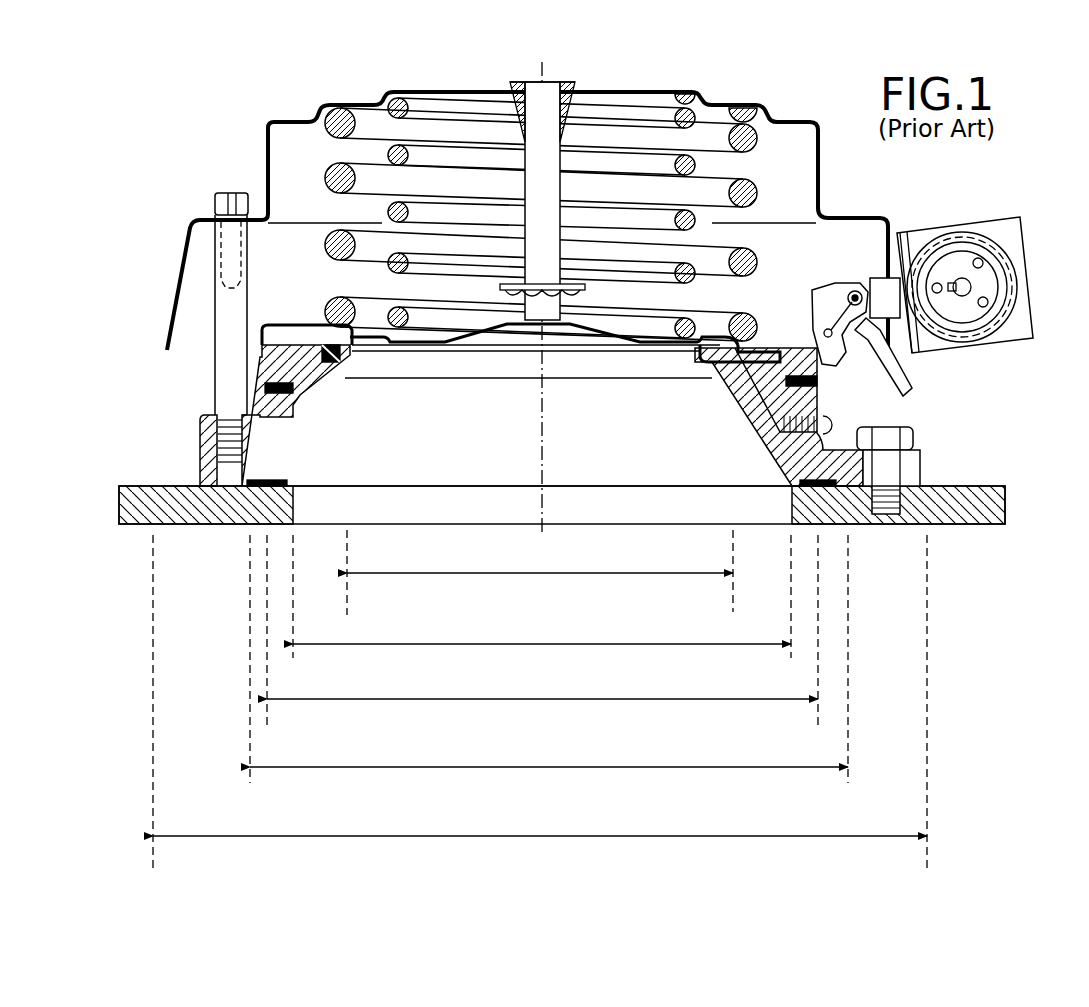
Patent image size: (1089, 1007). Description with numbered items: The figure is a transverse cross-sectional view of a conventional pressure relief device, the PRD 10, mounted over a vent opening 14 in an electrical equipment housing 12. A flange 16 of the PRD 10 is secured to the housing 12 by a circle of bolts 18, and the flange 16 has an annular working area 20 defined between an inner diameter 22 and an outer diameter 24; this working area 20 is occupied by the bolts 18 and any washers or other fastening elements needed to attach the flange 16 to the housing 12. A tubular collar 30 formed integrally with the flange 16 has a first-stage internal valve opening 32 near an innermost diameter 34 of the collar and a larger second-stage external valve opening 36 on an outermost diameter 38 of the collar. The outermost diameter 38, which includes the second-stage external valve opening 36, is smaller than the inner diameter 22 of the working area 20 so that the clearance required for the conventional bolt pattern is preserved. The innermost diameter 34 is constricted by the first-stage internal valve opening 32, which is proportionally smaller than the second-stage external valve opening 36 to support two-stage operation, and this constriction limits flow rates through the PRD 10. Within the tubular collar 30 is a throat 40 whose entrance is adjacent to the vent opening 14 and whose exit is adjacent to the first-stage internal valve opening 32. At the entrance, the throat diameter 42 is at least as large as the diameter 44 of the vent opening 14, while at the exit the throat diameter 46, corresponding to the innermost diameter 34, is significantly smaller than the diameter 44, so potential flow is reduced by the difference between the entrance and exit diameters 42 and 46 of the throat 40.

The PRD 10 is at (228, 100).
The electrical equipment housing 12 is at (162, 488).
The vent opening 14 is at (293, 495).
The flange 16 is at (913, 470).
The bolts 18 is at (900, 412).
The annular working area 20 is at (920, 446).
The inner diameter 22 is at (488, 766).
The outer diameter 24 is at (460, 836).
The tubular collar 30 is at (715, 405).
The first-stage internal valve opening 32 is at (328, 352).
The innermost diameter 34 is at (540, 552).
The second-stage external valve opening 36 is at (820, 380).
The outermost diameter 38 is at (663, 699).
The throat 40 is at (293, 436).
The throat diameter 42 is at (542, 626).
The diameter of the vent opening 44 is at (538, 648).
The throat diameter 46 is at (520, 573).